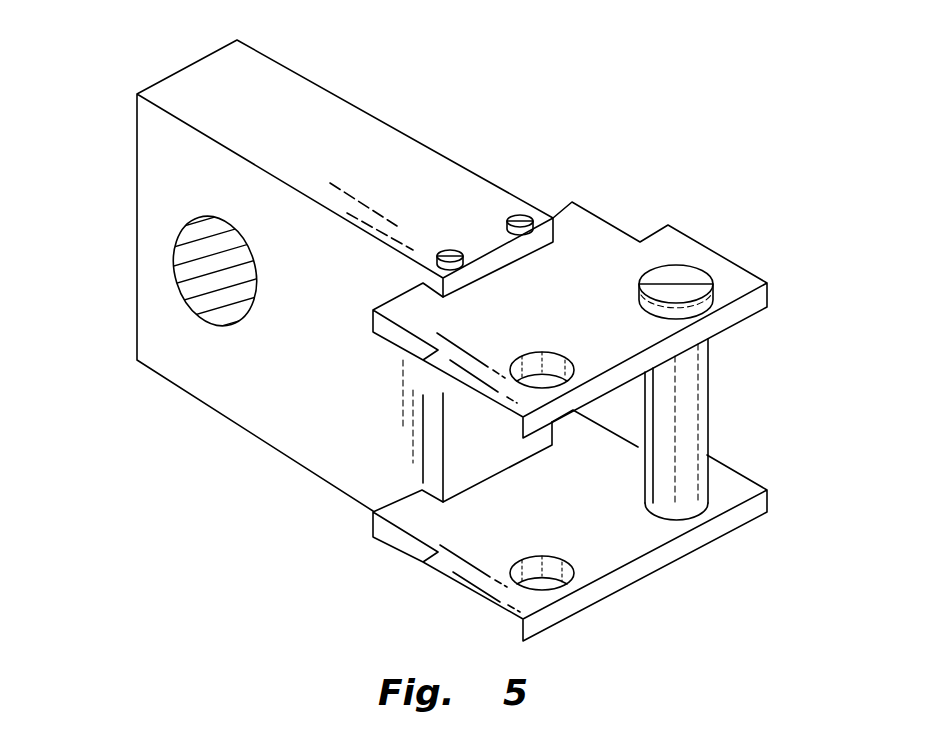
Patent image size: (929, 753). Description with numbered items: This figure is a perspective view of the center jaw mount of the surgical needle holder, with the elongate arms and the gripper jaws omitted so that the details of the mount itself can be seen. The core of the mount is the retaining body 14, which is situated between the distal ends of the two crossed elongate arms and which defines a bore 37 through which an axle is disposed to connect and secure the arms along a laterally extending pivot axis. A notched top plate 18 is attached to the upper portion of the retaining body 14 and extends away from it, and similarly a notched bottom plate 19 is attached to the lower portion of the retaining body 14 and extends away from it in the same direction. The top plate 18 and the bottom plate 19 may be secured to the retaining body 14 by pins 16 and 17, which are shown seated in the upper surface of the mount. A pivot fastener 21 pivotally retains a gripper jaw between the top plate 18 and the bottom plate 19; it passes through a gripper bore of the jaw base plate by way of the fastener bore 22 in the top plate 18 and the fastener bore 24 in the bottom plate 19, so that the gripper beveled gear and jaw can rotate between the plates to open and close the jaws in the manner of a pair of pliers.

The retaining body 14 is at (313, 147).
The pin 16 is at (450, 250).
The pin 17 is at (520, 215).
The notched top plate 18 is at (587, 237).
The notched bottom plate 19 is at (622, 545).
The pivot fastener 21 is at (682, 277).
The fastener bore 22 is at (557, 365).
The fastener bore 24 is at (562, 585).
The bore 37 is at (197, 297).